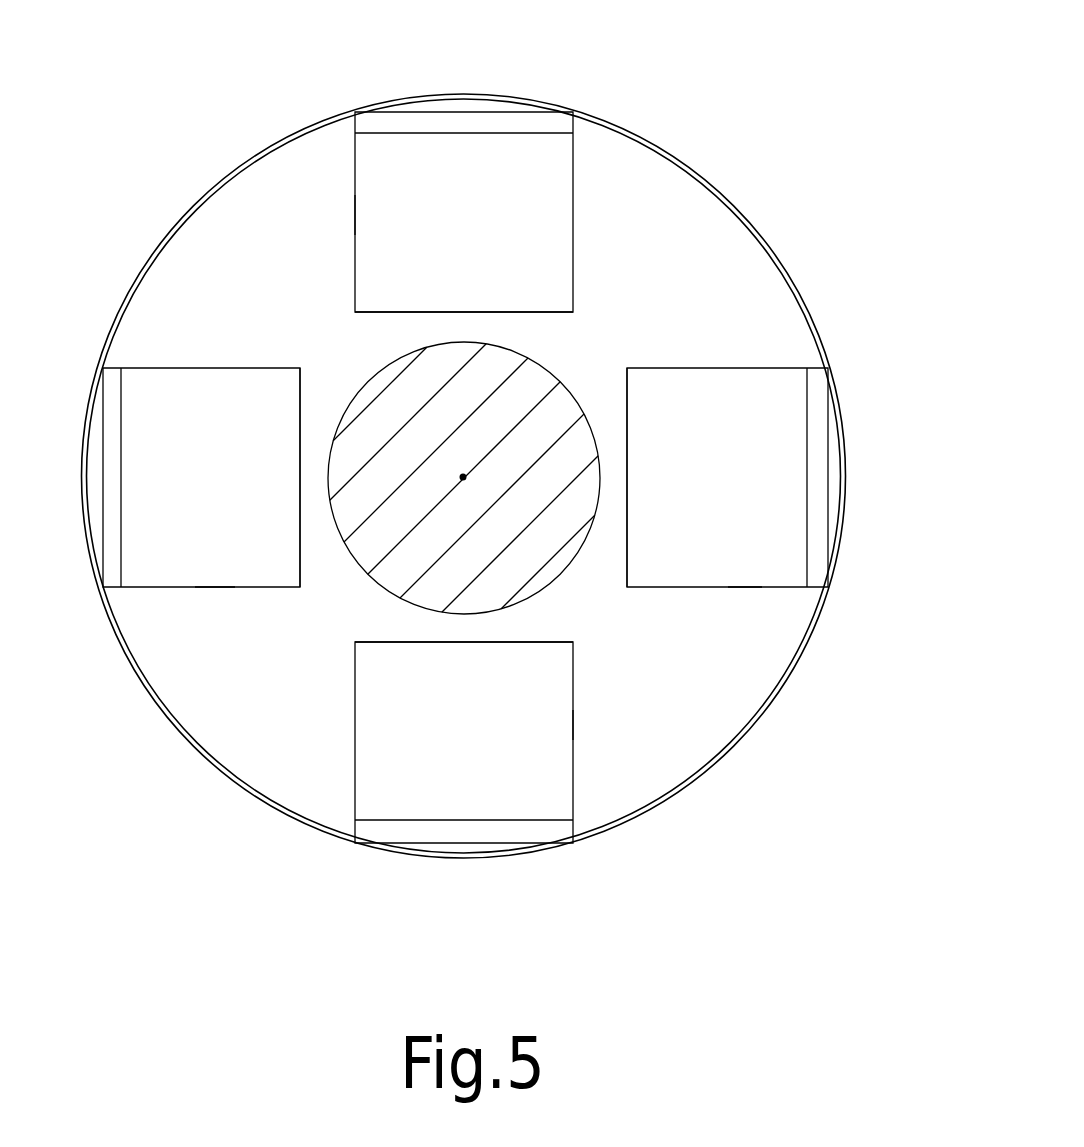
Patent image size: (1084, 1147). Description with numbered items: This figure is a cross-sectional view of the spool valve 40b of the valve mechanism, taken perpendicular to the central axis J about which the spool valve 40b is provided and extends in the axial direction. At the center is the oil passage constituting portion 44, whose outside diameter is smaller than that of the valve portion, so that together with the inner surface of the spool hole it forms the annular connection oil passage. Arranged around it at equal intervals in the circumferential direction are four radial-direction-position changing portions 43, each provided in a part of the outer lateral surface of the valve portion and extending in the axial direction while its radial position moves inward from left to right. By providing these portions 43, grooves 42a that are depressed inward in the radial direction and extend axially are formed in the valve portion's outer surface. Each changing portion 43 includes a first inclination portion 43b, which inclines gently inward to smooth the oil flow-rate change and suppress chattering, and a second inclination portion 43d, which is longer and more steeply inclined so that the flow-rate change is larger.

The spool valve 40b is at (810, 130).
The groove 42a is at (355, 228).
The radial-direction-position changing portion 43 is at (538, 200).
The first inclination portion 43b is at (497, 125).
The second inclination portion 43d is at (405, 187).
The oil passage constituting portion 44 is at (542, 408).
The central axis J is at (463, 477).